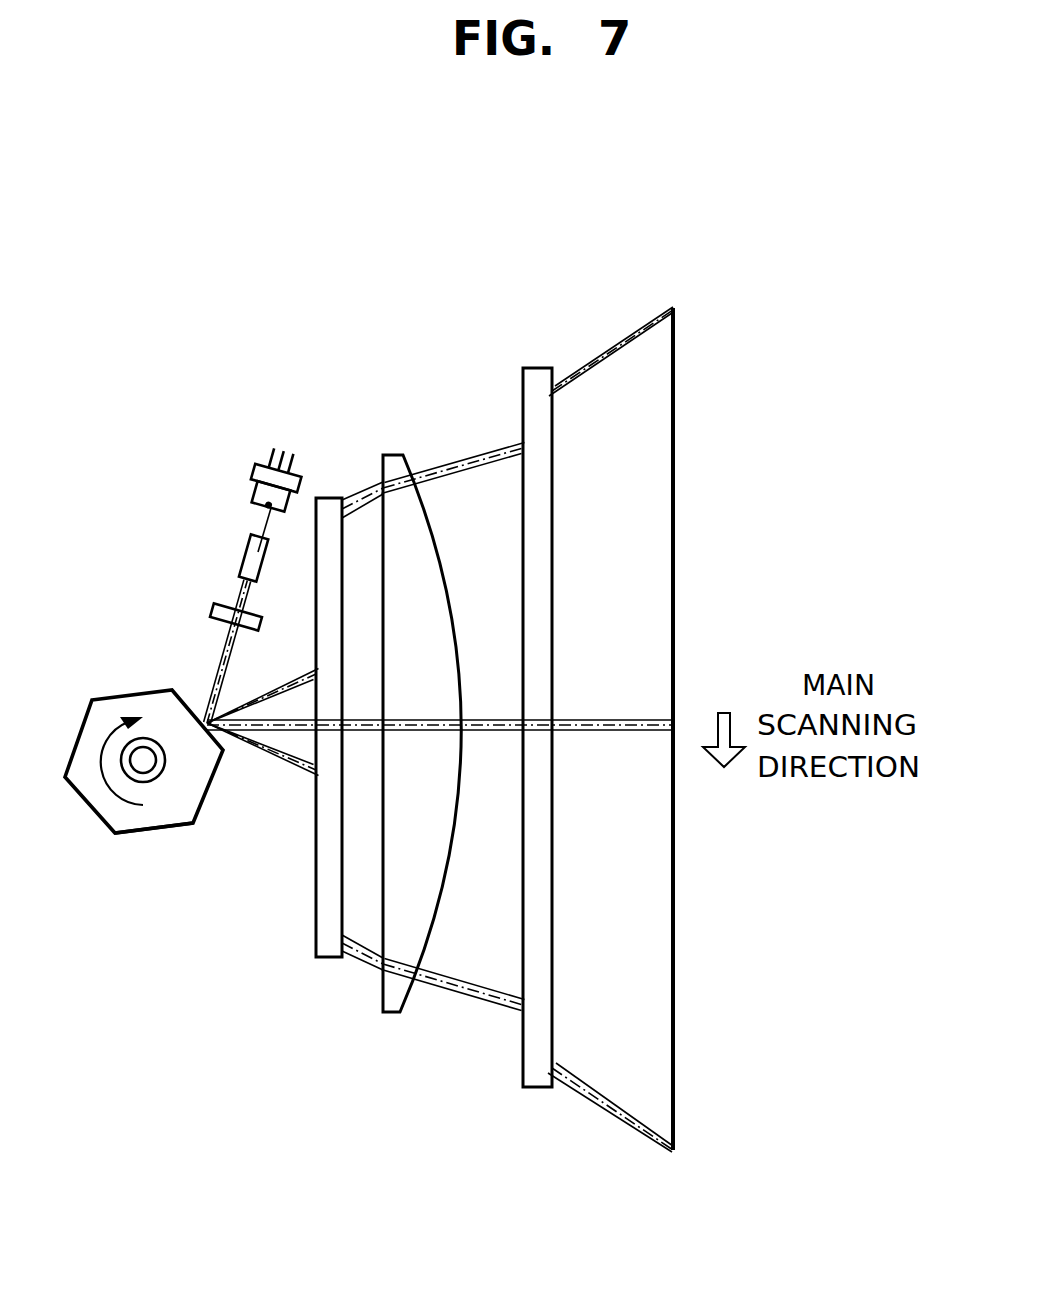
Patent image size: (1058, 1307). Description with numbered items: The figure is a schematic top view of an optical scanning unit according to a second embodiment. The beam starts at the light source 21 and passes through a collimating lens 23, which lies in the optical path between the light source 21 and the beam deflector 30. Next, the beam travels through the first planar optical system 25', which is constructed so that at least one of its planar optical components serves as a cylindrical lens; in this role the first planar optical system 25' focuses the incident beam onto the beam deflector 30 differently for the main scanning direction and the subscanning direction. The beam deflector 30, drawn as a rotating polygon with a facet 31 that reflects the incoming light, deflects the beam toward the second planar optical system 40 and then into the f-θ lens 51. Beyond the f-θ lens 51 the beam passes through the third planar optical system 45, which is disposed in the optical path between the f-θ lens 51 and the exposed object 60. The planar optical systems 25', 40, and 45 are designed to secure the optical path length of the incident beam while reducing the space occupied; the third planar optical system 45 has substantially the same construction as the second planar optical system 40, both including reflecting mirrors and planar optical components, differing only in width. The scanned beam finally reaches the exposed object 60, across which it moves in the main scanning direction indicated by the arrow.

The light source 21 is at (252, 482).
The collimating lens 23 is at (243, 562).
The first planar optical system (POS) 25' is at (184, 608).
The beam deflector 30 is at (86, 680).
The reflective facet of polygon mirror 31 is at (163, 813).
The second planar optical system (POS) 40 is at (320, 968).
The f-θ lens 51 is at (388, 1012).
The third planar optical system (POS) 45 is at (535, 1087).
The exposed object 60 is at (673, 1028).